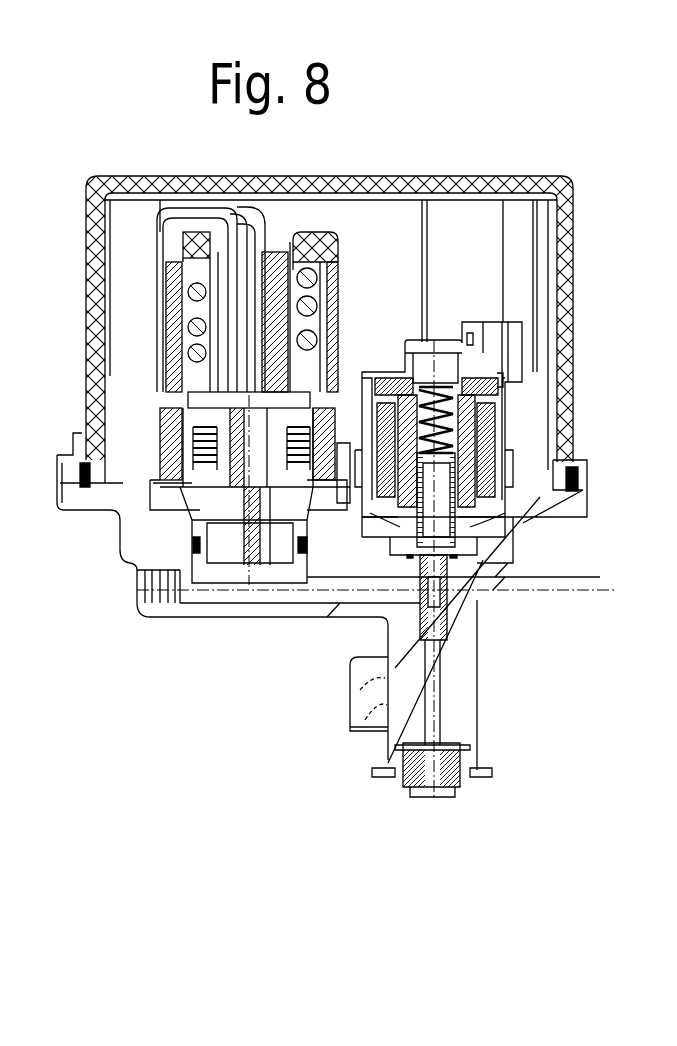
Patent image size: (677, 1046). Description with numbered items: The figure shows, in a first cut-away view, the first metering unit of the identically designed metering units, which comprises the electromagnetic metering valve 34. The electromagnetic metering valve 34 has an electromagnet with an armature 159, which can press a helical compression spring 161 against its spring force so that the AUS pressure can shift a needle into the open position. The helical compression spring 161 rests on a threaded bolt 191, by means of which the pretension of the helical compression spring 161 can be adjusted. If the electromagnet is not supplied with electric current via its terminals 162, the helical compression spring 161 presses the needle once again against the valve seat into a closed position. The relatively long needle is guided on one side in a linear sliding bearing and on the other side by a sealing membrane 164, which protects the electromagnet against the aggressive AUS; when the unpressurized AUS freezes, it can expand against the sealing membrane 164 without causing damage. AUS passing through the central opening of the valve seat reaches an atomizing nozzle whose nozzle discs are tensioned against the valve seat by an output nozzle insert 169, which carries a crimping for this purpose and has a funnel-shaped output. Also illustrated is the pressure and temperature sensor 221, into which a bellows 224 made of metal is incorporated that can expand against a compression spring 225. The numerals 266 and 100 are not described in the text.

The housing cover 266 is at (572, 262).
The pump assembly 100 is at (556, 552).
The armature 159 is at (475, 524).
The pressure and temperature sensor 221 is at (350, 245).
The compression spring 225 is at (197, 293).
The bellows 224 is at (197, 447).
The terminals 162 is at (487, 363).
The threaded bolt 191 is at (443, 360).
The helical compression spring 161 is at (465, 400).
The sealing membrane 164 is at (445, 550).
The electromagnetic metering valve 34 is at (473, 677).
The output nozzle insert 169 is at (443, 790).